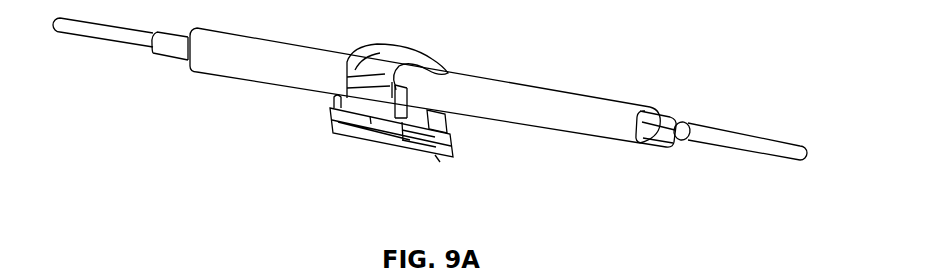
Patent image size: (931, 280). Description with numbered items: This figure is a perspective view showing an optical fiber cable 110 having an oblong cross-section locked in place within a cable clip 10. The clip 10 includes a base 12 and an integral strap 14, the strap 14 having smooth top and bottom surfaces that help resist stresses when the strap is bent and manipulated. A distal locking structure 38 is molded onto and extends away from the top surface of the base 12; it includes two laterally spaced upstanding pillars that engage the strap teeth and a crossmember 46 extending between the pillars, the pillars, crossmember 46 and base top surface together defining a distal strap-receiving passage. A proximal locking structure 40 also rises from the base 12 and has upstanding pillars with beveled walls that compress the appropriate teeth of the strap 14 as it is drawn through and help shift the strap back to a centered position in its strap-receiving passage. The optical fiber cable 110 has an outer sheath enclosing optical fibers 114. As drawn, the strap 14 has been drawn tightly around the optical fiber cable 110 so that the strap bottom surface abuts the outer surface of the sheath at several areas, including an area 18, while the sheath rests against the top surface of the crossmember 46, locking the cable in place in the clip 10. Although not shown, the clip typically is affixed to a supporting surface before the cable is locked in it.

The clip 10 is at (371, 30).
The base 12 is at (365, 130).
The strap 14 is at (393, 48).
The tab 18 is at (337, 99).
The distal locking structure 38 is at (442, 137).
The proximal locking structure 40 is at (403, 123).
The crossmember 46 is at (436, 107).
The optical fiber cable 110 is at (598, 105).
The optical fibers 114 is at (663, 123).